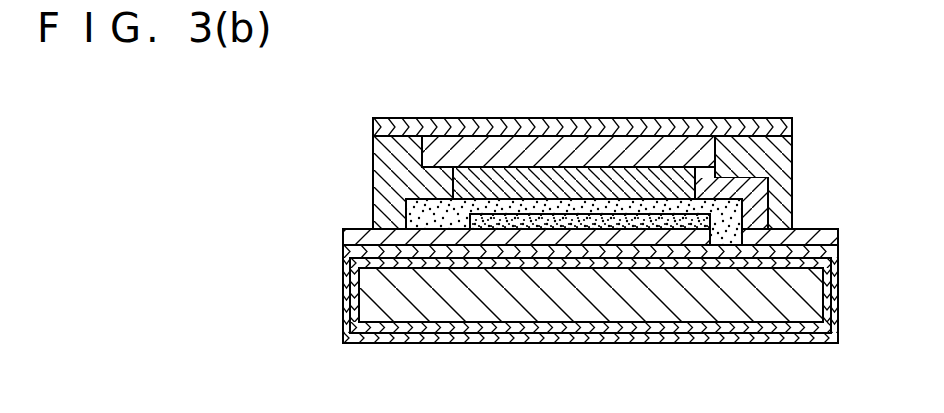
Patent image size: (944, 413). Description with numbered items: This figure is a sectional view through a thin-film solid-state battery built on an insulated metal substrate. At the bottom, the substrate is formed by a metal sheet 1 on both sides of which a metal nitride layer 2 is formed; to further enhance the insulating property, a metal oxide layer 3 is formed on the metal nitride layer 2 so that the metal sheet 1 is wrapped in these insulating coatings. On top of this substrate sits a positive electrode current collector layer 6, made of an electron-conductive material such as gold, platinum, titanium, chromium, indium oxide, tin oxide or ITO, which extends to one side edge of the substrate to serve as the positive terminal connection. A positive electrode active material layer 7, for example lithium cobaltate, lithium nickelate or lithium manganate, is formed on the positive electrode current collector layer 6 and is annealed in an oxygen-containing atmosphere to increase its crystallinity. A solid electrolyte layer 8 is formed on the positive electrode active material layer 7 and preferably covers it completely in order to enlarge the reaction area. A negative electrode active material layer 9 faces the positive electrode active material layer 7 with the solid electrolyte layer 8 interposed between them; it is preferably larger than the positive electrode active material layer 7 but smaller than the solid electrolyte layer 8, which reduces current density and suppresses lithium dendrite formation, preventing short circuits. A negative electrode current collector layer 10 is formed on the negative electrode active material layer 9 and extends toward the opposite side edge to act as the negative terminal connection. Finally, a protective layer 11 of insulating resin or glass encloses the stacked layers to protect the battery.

The metal sheet 1 is at (577, 300).
The metal nitride layer 2 is at (641, 332).
The metal oxide layer 3 is at (714, 338).
The positive electrode current collector layer 6 is at (342, 236).
The positive electrode active material layer 7 is at (490, 222).
The solid electrolyte layer 8 is at (443, 218).
The negative electrode active material layer 9 is at (578, 185).
The negative electrode current collector layer 10 is at (668, 150).
The protective layer 11 is at (395, 155).